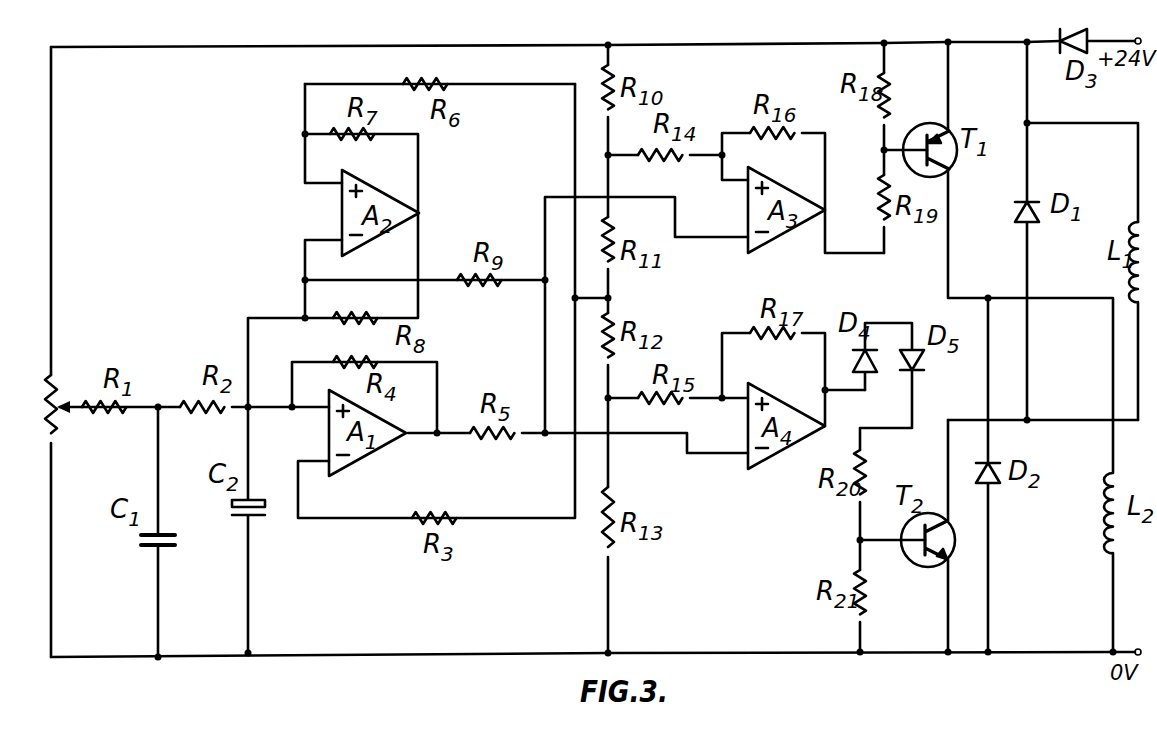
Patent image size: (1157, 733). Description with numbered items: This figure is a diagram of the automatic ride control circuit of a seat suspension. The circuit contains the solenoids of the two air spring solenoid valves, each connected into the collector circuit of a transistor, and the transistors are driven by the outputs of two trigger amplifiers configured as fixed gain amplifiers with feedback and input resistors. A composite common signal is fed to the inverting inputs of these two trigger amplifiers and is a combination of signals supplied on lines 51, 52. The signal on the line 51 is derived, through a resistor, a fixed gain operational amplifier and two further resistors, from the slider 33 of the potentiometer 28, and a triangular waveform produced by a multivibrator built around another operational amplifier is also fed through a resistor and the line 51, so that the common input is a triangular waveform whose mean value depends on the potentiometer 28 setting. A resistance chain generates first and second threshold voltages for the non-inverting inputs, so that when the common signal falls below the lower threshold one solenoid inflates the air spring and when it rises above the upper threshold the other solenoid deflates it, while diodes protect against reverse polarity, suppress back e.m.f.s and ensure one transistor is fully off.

The potentiometer 28 is at (58, 392).
The slider 33 is at (63, 420).
The line 51 is at (537, 284).
The line 52 is at (538, 436).